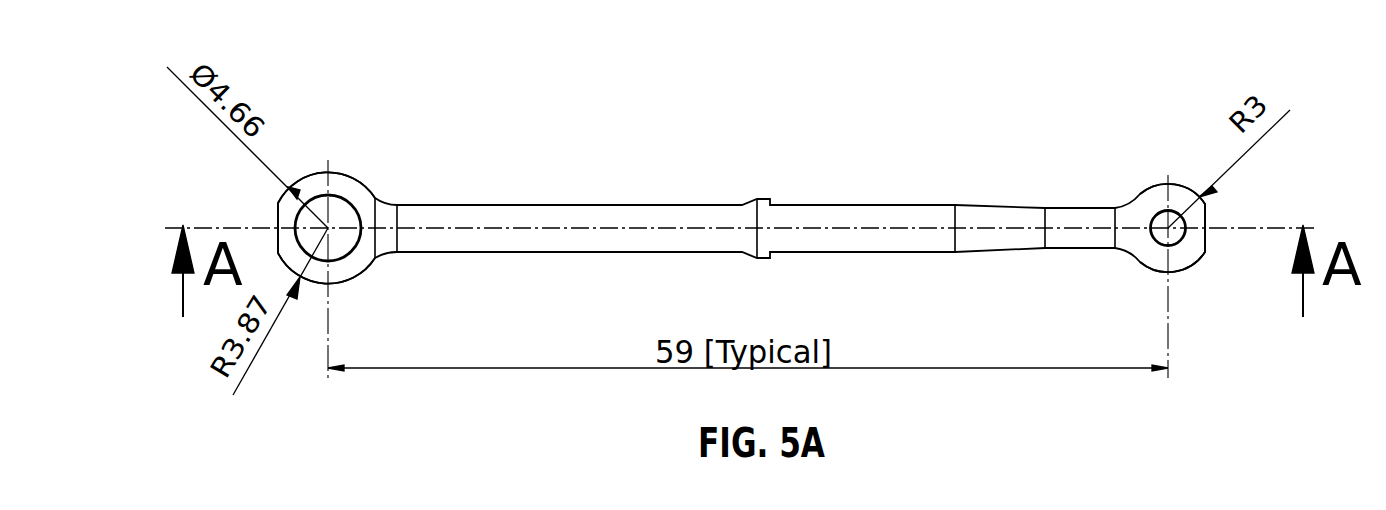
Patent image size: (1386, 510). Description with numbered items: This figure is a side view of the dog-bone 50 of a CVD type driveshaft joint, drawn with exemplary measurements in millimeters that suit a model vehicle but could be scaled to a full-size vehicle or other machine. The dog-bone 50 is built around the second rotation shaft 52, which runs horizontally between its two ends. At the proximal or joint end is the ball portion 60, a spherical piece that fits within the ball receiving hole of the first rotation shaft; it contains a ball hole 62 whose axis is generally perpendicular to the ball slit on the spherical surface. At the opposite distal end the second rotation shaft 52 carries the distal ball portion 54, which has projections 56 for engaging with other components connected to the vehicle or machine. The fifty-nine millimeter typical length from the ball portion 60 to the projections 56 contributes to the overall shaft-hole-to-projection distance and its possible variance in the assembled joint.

The dog-bone 50 is at (892, 139).
The second rotation shaft 52 is at (592, 200).
The distal ball portion 54 is at (1157, 263).
The projections 56 is at (1157, 212).
The ball portion 60 is at (360, 175).
The ball hole 62 is at (322, 207).